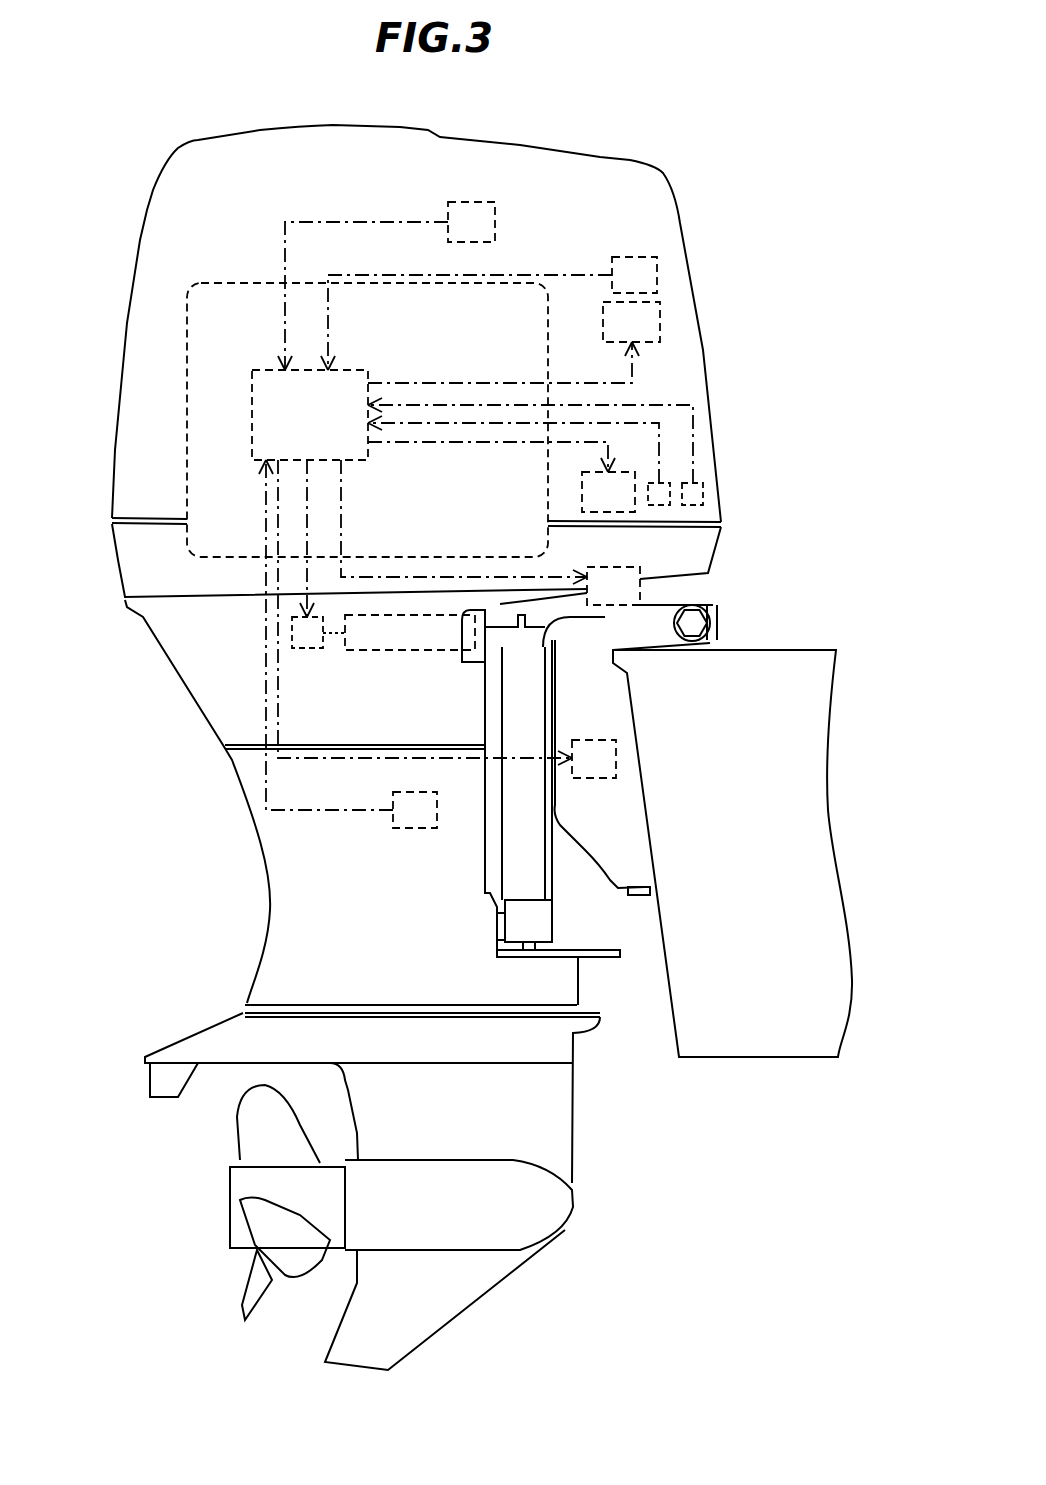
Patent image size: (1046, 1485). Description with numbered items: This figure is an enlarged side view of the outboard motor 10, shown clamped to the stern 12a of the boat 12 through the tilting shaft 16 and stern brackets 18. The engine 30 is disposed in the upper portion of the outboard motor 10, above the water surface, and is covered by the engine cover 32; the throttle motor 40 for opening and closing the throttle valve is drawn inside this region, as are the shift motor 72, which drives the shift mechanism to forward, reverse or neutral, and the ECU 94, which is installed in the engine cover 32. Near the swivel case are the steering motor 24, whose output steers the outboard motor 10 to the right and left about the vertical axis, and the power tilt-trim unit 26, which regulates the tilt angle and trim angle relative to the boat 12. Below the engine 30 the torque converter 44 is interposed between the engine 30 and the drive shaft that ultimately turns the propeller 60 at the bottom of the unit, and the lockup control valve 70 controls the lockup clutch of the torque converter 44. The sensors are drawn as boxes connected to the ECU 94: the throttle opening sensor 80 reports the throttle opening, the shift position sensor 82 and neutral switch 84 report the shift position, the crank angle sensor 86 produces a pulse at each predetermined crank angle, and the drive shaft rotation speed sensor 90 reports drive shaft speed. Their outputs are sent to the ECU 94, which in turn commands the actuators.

The outboard motor 10 is at (672, 168).
The boat 12 is at (723, 1060).
The stern 12a is at (690, 1047).
The tilting shaft 16 is at (695, 622).
The stern brackets 18 is at (630, 847).
The steering motor 24 is at (599, 599).
The power tilt-trim unit 26 is at (616, 757).
The engine 30 is at (187, 328).
The engine cover 32 is at (143, 240).
The throttle motor 40 is at (646, 336).
The torque converter 44 is at (407, 650).
The propeller 60 is at (253, 1282).
The lockup control valve 70 is at (307, 648).
The shift motor 72 is at (594, 505).
The throttle opening sensor 80 is at (622, 257).
The shift position sensor 82 is at (660, 505).
The neutral switch 84 is at (703, 487).
The crank angle sensor 86 is at (495, 213).
The drive shaft rotation speed sensor 90 is at (418, 828).
The ECU 94 is at (252, 408).